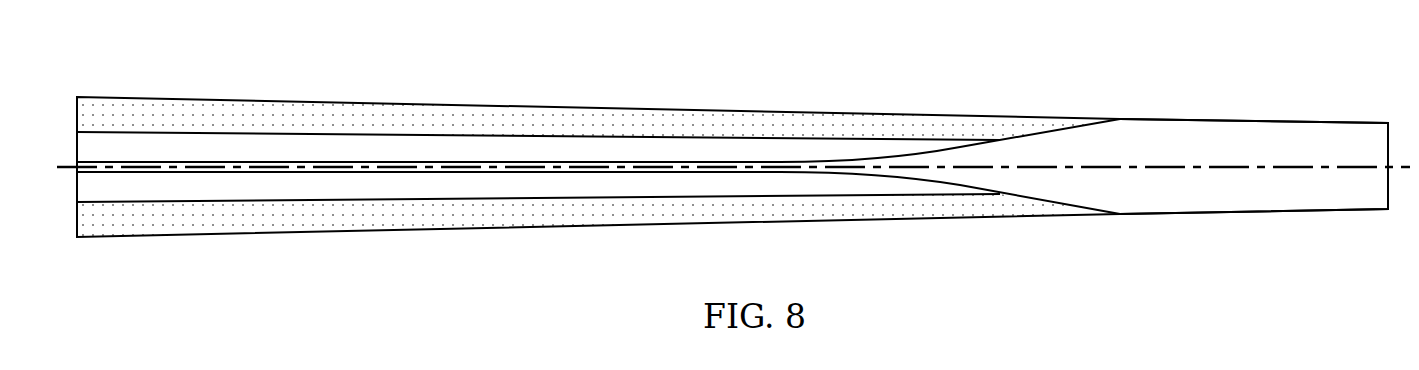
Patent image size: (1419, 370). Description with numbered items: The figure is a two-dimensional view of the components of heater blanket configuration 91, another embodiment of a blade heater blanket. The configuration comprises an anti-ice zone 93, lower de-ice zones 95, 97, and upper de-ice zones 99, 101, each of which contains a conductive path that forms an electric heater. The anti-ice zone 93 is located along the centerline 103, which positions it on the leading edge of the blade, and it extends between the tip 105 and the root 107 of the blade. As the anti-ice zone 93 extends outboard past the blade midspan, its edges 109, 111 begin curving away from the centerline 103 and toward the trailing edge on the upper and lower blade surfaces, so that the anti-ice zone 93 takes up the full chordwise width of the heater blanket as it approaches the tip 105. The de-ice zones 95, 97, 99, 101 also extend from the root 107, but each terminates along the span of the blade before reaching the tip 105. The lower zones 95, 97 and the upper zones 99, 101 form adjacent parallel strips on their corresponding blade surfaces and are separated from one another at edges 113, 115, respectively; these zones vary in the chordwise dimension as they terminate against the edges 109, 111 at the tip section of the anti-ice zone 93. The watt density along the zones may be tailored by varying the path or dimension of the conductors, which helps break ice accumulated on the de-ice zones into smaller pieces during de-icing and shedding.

The heater blanket configuration 91 is at (245, 80).
The anti-ice zone 93 is at (1273, 140).
The lower de-ice zone 95 is at (743, 215).
The lower de-ice zone 97 is at (580, 185).
The upper de-ice zone 99 is at (783, 118).
The upper de-ice zone 101 is at (594, 147).
The centerline 103 is at (1171, 165).
The tip 105 is at (1390, 197).
The root 107 is at (77, 218).
The edge 109 is at (1033, 138).
The edge 111 is at (1035, 205).
The edge 113 is at (368, 200).
The edge 115 is at (473, 133).